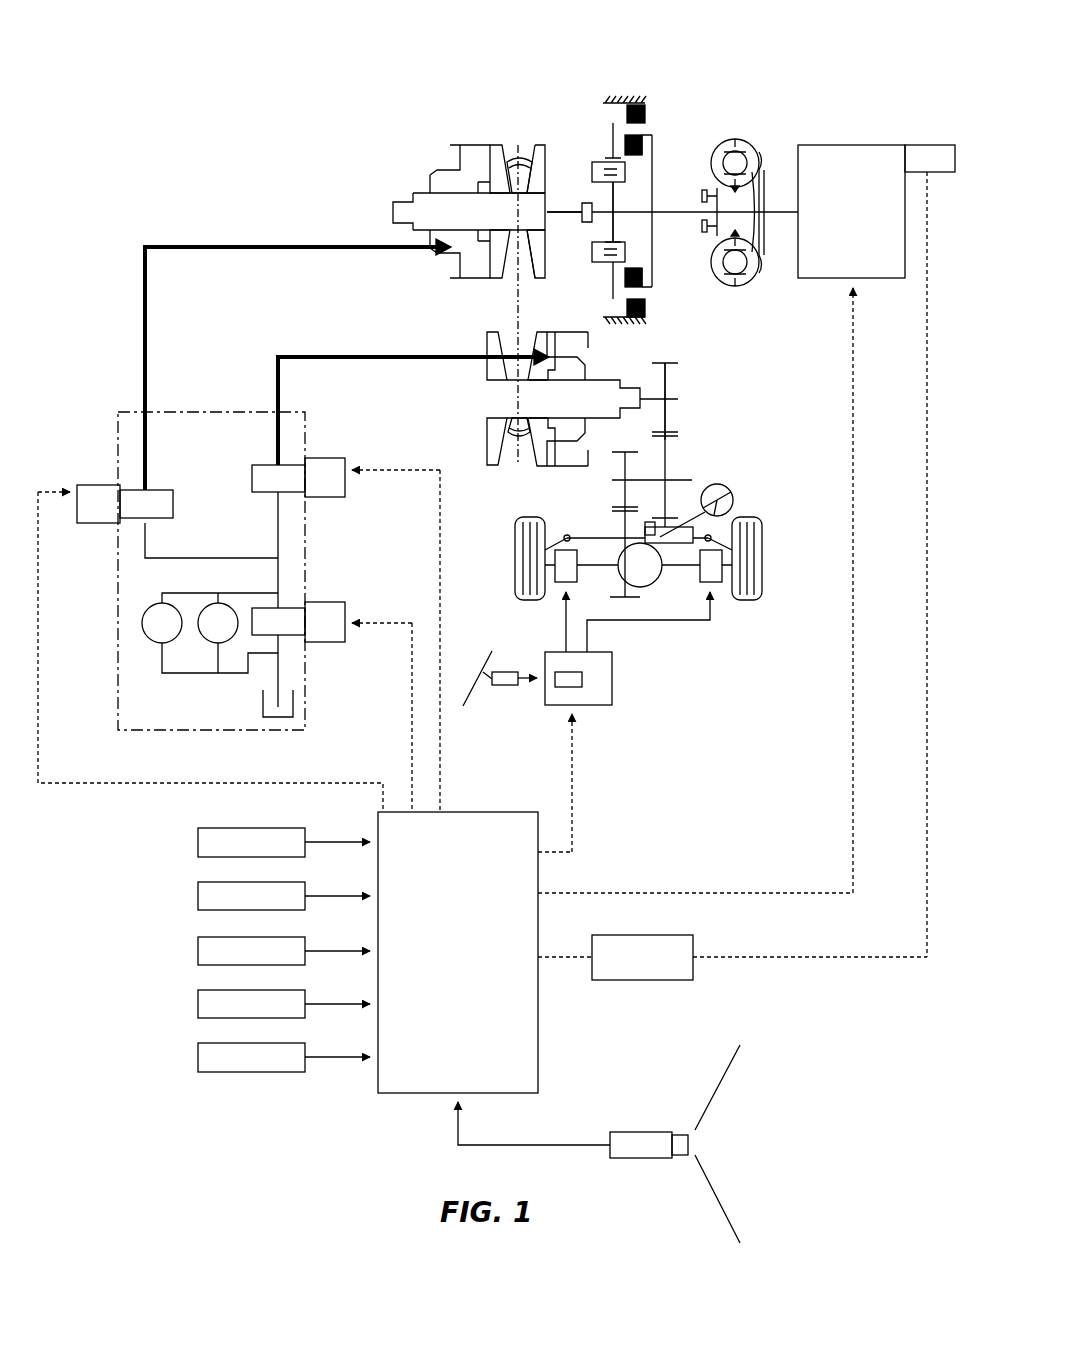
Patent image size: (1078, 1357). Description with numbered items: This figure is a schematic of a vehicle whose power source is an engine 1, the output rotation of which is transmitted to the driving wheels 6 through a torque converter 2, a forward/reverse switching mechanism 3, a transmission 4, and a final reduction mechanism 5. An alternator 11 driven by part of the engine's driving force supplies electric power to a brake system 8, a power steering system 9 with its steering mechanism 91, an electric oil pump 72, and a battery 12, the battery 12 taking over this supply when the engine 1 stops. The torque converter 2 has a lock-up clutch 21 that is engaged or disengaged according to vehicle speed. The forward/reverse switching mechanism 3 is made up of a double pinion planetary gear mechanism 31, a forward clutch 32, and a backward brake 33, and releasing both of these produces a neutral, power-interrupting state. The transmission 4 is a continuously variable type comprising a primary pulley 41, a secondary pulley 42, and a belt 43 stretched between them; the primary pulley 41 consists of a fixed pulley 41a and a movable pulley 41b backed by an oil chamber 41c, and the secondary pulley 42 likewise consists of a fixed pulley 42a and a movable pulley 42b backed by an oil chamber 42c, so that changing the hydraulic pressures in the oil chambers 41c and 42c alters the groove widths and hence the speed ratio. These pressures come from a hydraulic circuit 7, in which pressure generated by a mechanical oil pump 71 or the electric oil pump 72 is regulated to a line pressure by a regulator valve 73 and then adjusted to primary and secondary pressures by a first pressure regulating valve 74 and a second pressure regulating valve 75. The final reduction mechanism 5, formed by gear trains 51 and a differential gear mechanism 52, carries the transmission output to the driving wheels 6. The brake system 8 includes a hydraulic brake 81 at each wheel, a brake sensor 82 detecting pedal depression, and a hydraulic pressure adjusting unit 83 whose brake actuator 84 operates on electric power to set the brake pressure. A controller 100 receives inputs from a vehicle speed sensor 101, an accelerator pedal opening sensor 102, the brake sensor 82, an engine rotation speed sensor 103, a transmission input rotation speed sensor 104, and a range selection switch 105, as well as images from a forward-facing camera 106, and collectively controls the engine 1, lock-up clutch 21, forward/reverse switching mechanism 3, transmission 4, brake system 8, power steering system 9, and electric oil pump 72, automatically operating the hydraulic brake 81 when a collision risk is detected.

The engine 1 is at (860, 145).
The alternator 11 is at (922, 145).
The battery 12 is at (640, 980).
The torque converter 2 is at (738, 112).
The lock-up clutch 21 is at (758, 190).
The forward/reverse switching mechanism 3 is at (633, 82).
The double pinion planetary gear mechanism 31 is at (620, 243).
The forward clutch 32 is at (648, 135).
The backward brake 33 is at (645, 100).
The transmission 4 is at (519, 84).
The primary pulley 41 is at (489, 175).
The fixed pulley 41a is at (537, 143).
The movable pulley 41b is at (495, 145).
The oil chamber 41c is at (475, 160).
The secondary pulley 42 is at (545, 394).
The fixed pulley 42a is at (487, 345).
The movable pulley 42b is at (540, 332).
The oil chamber 42c is at (560, 448).
The belt 43 is at (511, 440).
The final reduction mechanism 5 is at (697, 487).
The gear trains 51 is at (667, 448).
The differential gear mechanism 52 is at (647, 585).
The driving wheels 6 is at (513, 577).
The hydraulic circuit 7 is at (293, 525).
The mechanical oil pump 71 is at (153, 643).
The electric oil pump 72 is at (208, 643).
The regulator valve 73 is at (287, 607).
The first pressure regulating valve 74 is at (137, 488).
The second pressure regulating valve 75 is at (285, 463).
The brake system 8 is at (606, 701).
The hydraulic brake 81 is at (562, 583).
The brake sensor 82 is at (503, 685).
The hydraulic pressure adjusting unit 83 is at (612, 673).
The brake actuator 84 is at (565, 685).
The power steering system 9 is at (742, 486).
The steering mechanism 91 is at (645, 530).
The controller 100 is at (530, 1060).
The vehicle speed sensor 101 is at (198, 842).
The accelerator pedal opening sensor 102 is at (198, 896).
The engine rotation speed sensor 103 is at (198, 951).
The transmission input rotation speed sensor 104 is at (198, 1004).
The range selection switch 105 is at (198, 1057).
The camera 106 is at (637, 1130).